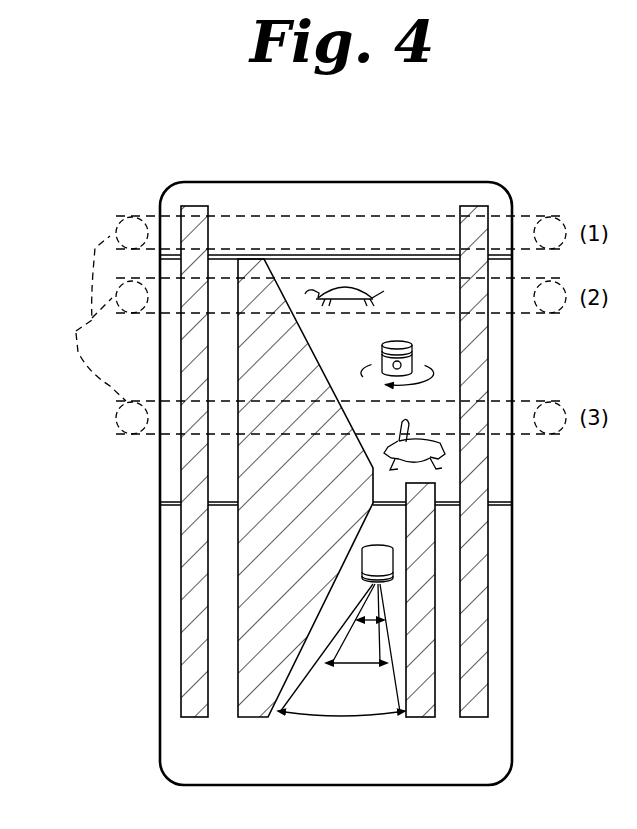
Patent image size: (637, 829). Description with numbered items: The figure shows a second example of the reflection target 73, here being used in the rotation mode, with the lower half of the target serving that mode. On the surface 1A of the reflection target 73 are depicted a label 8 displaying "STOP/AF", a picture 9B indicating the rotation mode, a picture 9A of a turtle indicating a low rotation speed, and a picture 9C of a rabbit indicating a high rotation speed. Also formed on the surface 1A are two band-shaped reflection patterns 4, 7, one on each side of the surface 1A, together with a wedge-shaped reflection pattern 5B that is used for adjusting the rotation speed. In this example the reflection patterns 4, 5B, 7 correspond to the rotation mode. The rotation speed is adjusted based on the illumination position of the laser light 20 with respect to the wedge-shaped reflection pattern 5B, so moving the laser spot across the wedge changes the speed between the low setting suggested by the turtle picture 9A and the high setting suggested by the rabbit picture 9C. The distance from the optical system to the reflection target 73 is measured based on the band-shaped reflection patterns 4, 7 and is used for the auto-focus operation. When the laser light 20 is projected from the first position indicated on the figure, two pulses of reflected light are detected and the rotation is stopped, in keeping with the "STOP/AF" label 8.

The reflection target 73 is at (331, 167).
The surface 1A is at (435, 192).
The band-shaped reflection pattern 4 is at (484, 212).
The band-shaped reflection pattern 7 is at (196, 212).
The wedge-shaped reflection pattern 5B is at (250, 272).
The label 8 is at (283, 208).
The picture of a turtle 9A is at (381, 283).
The picture indicating the rotation mode 9B is at (404, 346).
The picture of a rabbit 9C is at (440, 458).
The laser light 20 is at (76, 331).